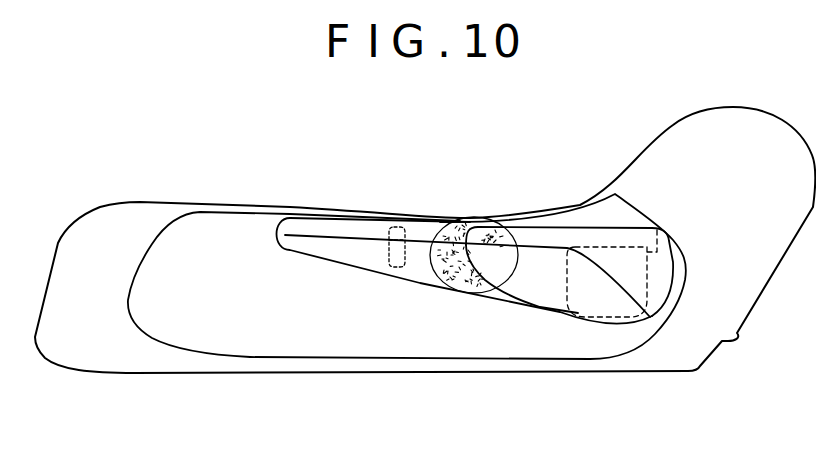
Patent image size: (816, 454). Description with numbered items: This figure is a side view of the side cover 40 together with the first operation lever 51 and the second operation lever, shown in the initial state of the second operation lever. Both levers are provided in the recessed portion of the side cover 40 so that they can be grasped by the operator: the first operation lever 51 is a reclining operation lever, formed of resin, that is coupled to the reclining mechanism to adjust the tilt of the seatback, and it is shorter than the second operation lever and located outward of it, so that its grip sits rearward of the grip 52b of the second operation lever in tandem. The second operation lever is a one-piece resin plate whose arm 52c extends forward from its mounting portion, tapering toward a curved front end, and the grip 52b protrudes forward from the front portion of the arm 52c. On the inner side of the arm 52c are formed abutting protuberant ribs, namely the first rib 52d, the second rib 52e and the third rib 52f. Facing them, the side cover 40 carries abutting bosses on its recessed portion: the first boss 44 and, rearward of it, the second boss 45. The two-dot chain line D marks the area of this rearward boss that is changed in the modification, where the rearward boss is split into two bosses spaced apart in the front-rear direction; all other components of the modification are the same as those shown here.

The side cover 40 is at (201, 225).
The first boss 44 is at (390, 238).
The second boss 45 is at (490, 224).
The first operation lever 51 is at (603, 263).
The grip 52b is at (337, 228).
The arm 52c is at (360, 252).
The first rib 52d is at (396, 230).
The second rib 52e is at (465, 236).
The third rib 52f is at (475, 283).
The two-dot chain line D is at (478, 212).